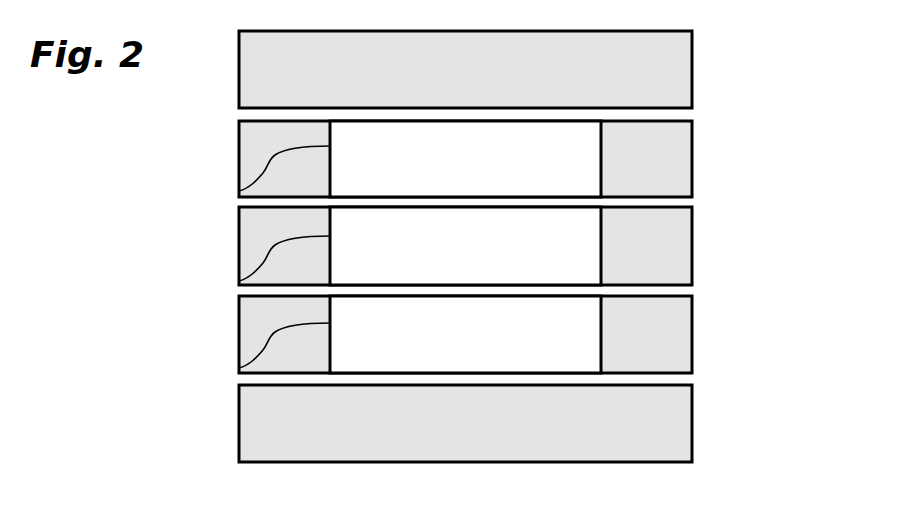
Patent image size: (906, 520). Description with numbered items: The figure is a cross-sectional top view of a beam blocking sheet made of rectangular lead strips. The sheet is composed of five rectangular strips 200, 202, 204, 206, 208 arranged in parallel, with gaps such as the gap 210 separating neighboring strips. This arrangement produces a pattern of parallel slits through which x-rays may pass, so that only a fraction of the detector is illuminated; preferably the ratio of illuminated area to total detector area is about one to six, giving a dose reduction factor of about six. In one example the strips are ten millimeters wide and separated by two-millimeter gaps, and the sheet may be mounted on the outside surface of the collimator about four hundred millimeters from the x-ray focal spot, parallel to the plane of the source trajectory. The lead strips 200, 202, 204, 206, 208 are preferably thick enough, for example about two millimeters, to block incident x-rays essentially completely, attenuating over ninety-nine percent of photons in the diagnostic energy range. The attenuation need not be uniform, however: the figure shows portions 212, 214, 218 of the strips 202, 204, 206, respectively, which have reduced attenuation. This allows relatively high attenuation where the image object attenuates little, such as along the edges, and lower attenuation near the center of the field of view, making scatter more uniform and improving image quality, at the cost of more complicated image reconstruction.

The rectangular lead strip 200 is at (692, 73).
The gap 210 is at (692, 115).
The rectangular lead strip 202 is at (692, 152).
The rectangular lead strip 204 is at (692, 246).
The rectangular lead strip 206 is at (692, 334).
The rectangular lead strip 208 is at (692, 422).
The reduced attenuation portion 212 is at (239, 191).
The reduced attenuation portion 214 is at (239, 281).
The reduced attenuation portion 218 is at (239, 368).